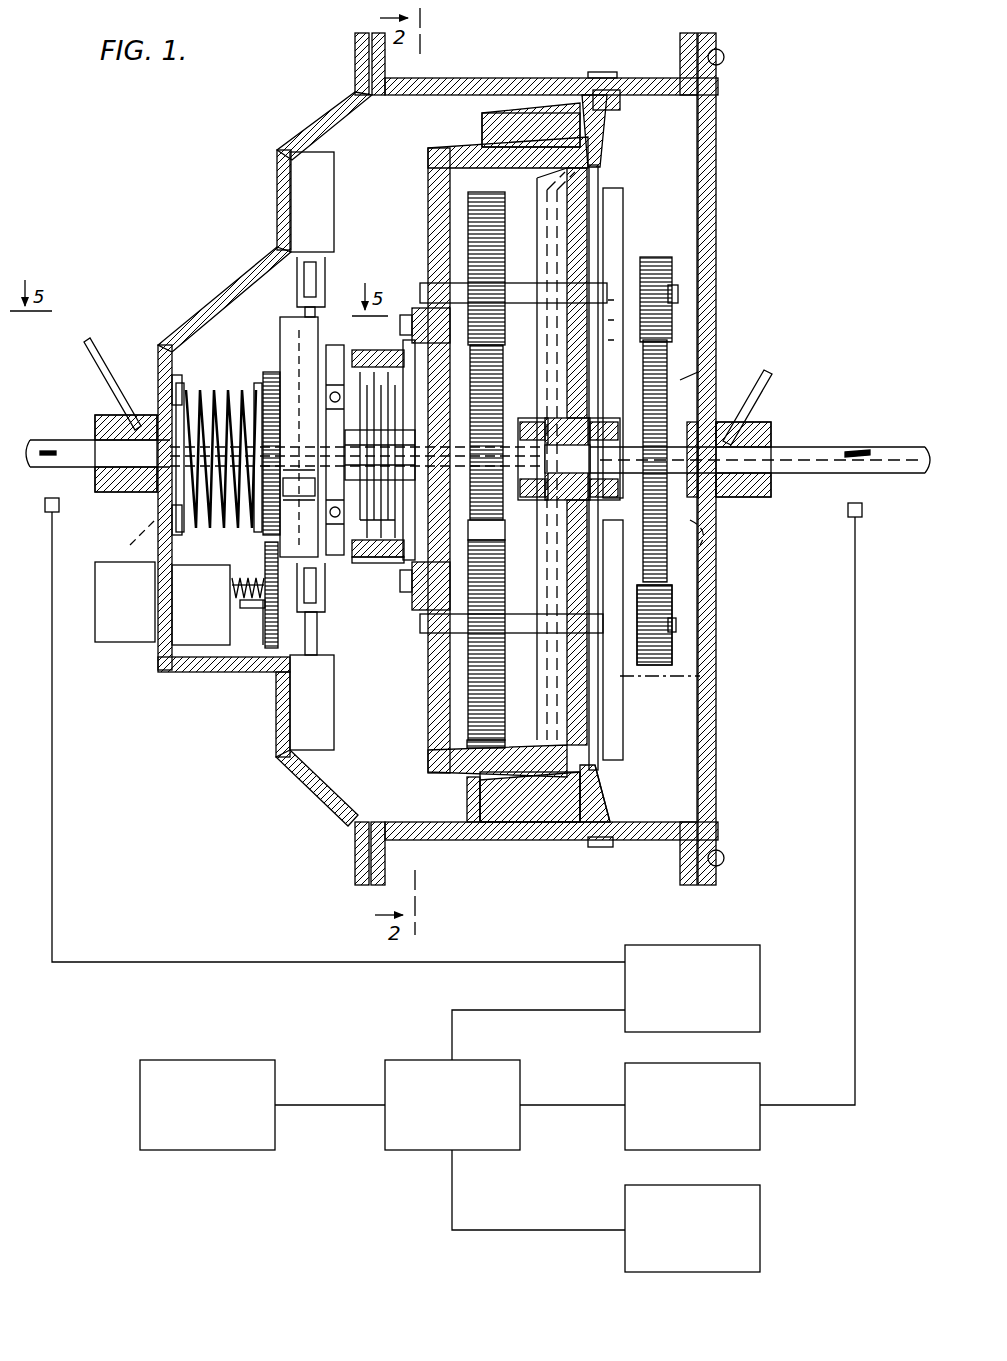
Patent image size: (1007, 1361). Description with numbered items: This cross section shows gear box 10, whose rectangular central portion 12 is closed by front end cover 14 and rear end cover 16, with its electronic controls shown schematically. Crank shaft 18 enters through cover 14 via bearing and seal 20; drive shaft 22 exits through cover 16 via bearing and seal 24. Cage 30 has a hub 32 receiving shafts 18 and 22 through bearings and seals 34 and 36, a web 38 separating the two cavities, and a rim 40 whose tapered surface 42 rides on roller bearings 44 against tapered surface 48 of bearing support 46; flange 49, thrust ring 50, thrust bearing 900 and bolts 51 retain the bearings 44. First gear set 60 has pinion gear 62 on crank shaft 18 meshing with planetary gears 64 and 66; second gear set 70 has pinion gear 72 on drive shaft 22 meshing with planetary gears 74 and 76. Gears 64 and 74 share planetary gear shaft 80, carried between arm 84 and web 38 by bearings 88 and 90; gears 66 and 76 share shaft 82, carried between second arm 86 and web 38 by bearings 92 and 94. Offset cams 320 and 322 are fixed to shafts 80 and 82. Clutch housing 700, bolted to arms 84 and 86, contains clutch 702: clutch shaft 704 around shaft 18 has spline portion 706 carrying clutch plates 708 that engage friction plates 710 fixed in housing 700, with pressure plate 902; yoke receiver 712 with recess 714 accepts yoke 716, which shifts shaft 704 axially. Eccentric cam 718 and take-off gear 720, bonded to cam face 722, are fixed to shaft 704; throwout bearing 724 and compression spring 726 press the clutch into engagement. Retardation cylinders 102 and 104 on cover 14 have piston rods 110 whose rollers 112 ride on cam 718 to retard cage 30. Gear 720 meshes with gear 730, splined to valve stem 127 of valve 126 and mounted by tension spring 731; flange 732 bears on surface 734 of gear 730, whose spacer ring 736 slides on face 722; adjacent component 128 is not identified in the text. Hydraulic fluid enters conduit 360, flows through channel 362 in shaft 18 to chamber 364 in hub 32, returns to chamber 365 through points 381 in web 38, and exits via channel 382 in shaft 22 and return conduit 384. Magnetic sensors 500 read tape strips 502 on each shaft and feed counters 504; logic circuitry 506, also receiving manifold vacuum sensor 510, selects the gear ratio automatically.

The gear box 10 is at (443, 76).
The central portion 12 is at (455, 78).
The front end cover 14 is at (308, 790).
The rear end cover 16 is at (716, 190).
The crank shaft 18 is at (30, 442).
The combination antifriction bearing and oil pressure seal 20 is at (140, 492).
The drive shaft 22 is at (820, 447).
The combination antifriction bearing and oil pressure seal 24 is at (742, 497).
The cage 30 is at (600, 150).
The hub 32 is at (612, 422).
The combination antifriction bearing and oil pressure seal 34 is at (537, 424).
The combination antifriction bearing and oil pressure seal 36 is at (600, 495).
The web 38 is at (580, 205).
The rim 40 is at (503, 147).
The outer circumferential surface 42 is at (440, 152).
The roller bearings 44 is at (560, 122).
The bearing support 46 is at (542, 100).
The bearing support surface 48 is at (493, 800).
The circumferential flange 49 is at (468, 800).
The annular thrust ring 50 is at (608, 782).
The bolts 51 is at (608, 848).
The first gear set 60 is at (458, 243).
The pinion gear 62 is at (470, 408).
The planetary gear 64 is at (467, 730).
The planetary gear 66 is at (485, 193).
The second gear set 70 is at (672, 345).
The pinion gear 72 is at (642, 425).
The planetary gear 74 is at (680, 660).
The planetary gear 76 is at (670, 268).
The planetary gear shaft 80 is at (680, 623).
The planetary gear shaft 82 is at (680, 295).
The arm 84 is at (425, 747).
The second arm 86 is at (425, 245).
The antifriction bearing 88 is at (427, 636).
The antifriction bearing 90 is at (580, 642).
The antifriction bearing 92 is at (425, 283).
The antifriction bearing 94 is at (590, 275).
The rotation retardation cylinder 102 is at (335, 158).
The rotation retardation cylinder 104 is at (338, 735).
The piston rod 110 is at (312, 258).
The roller 112 is at (314, 258).
The valve 126 is at (190, 646).
The valve stem 127 is at (222, 646).
The solenoid housing 128 is at (127, 634).
The offset cam 320 is at (615, 705).
The offset cam 322 is at (623, 212).
The conduit 360 is at (105, 338).
The hollow channel 362 is at (130, 545).
The hollow chamber 364 is at (535, 493).
The second chamber 365 is at (682, 382).
The points 381 is at (612, 243).
The hollow channel 382 is at (705, 540).
The return conduit 384 is at (745, 415).
The magnetic sensor 500 is at (45, 505).
The strip of magnetic tape 502 is at (50, 450).
The counter 504 is at (760, 970).
The logic circuitry 506 is at (521, 1075).
The sensor 510 is at (760, 1212).
The clutch housing 700 is at (362, 565).
The clutch 702 is at (356, 372).
The clutch shaft 704 is at (300, 437).
The expanded diameter portion 706 is at (416, 432).
The clutch plates 708 is at (400, 395).
The annular clutch friction plates 710 is at (400, 530).
The yoke receiver 712 is at (312, 527).
The recess 714 is at (312, 490).
The yoke 716 is at (334, 385).
The circular cam 718 is at (278, 300).
The take-off gear 720 is at (270, 370).
The face 722 is at (278, 322).
The throwout bearing 724 is at (238, 382).
The compression spring 726 is at (180, 385).
The gear 730 is at (255, 655).
The tension spring 731 is at (249, 572).
The flange 732 is at (225, 330).
The surface 734 is at (246, 648).
The spacer ring 736 is at (262, 650).
The friction reducing thrust bearing 900 is at (580, 785).
The pressure plate 902 is at (406, 540).